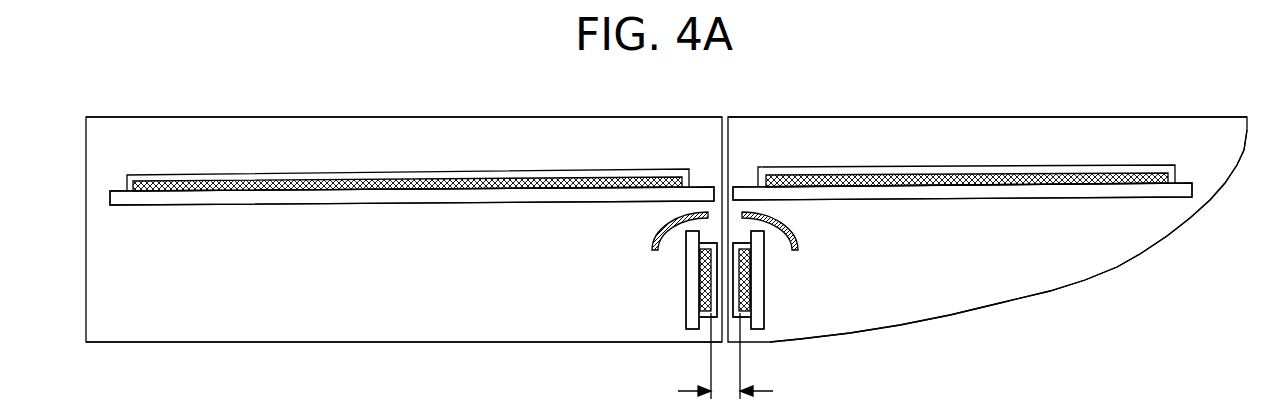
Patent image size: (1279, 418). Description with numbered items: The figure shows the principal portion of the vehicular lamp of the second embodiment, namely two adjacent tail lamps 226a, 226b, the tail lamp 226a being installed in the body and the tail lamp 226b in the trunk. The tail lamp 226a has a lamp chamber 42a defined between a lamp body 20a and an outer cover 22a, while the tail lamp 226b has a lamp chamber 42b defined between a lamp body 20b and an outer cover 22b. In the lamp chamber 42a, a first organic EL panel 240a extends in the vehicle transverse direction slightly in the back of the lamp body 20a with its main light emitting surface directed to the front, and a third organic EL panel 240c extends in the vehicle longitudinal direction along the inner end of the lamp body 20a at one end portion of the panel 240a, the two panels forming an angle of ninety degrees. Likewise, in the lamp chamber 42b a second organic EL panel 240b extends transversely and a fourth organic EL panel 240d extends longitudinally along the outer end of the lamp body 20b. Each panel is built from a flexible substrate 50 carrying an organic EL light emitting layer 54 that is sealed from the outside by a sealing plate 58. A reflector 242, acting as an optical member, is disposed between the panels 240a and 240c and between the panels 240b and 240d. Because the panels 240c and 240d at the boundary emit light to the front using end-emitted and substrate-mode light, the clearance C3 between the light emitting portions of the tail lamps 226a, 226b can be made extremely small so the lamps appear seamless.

The tail lamp 226b is at (333, 109).
The tail lamp 226a is at (1106, 103).
The lamp body 20b is at (494, 119).
The lamp body 20a is at (928, 118).
The outer cover 22b is at (210, 343).
The outer cover 22a is at (1125, 263).
The lamp chamber 42b is at (352, 157).
The lamp chamber 42a is at (990, 154).
The substrate 50 is at (478, 198).
The organic EL light emitting layer 54 is at (448, 191).
The sealing plate 58 is at (415, 179).
The second organic EL panel 240b is at (530, 203).
The first organic EL panel 240a is at (910, 202).
The fourth organic EL panel 240d is at (690, 230).
The third organic EL panel 240c is at (757, 230).
The reflector 242 is at (675, 217).
The clearance C3 is at (725, 365).